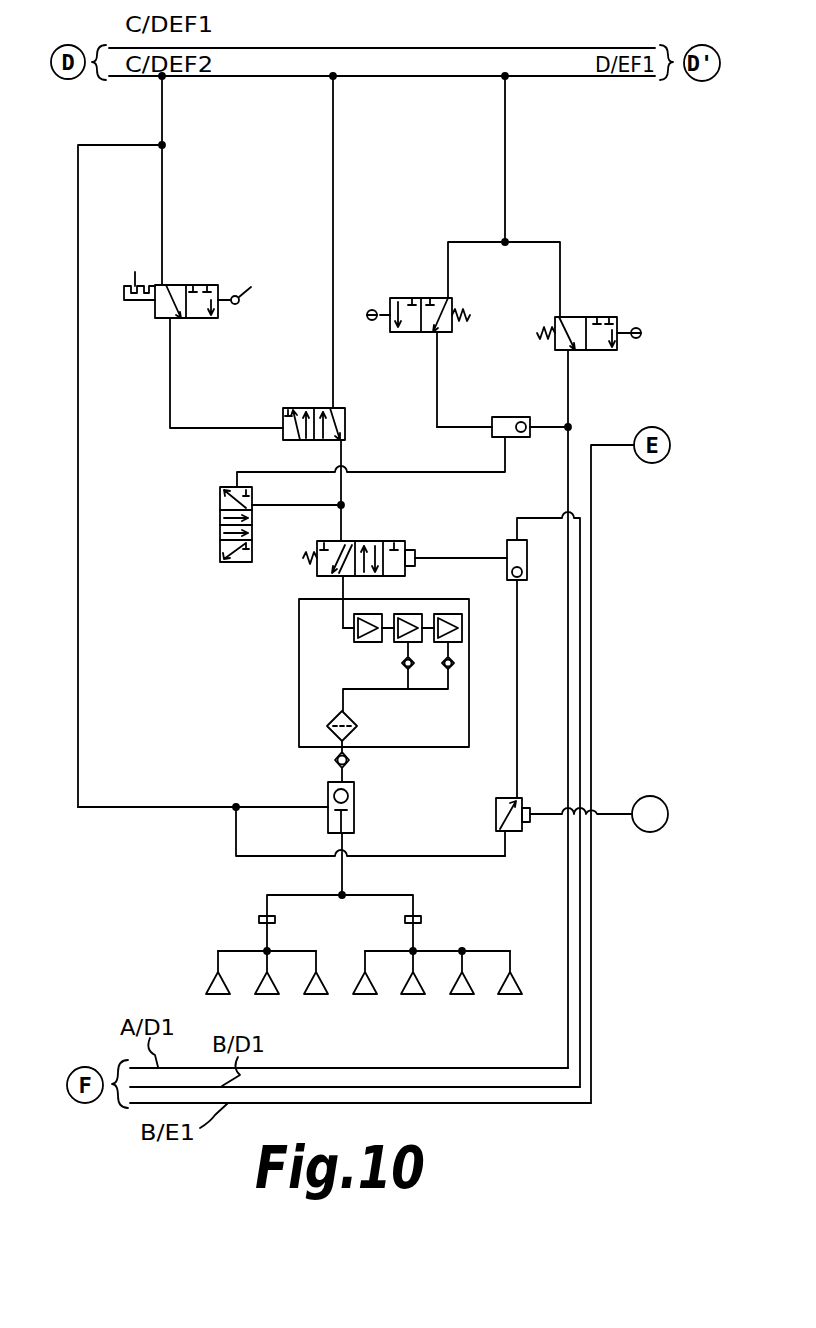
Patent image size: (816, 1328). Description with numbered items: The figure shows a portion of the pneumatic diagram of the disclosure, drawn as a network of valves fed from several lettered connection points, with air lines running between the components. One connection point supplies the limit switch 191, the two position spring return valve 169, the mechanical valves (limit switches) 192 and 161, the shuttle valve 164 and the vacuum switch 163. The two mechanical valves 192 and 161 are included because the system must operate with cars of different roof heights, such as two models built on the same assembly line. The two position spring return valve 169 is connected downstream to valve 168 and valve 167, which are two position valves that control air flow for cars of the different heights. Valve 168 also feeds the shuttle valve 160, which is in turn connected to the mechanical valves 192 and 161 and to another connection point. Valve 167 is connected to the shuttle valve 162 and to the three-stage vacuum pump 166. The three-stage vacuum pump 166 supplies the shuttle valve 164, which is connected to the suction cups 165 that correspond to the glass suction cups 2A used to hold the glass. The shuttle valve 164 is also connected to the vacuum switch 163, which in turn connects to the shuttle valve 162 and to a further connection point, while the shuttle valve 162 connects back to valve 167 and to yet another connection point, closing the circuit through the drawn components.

The limit switch 191 is at (218, 308).
The mechanical valve (limit switch) 192 is at (452, 302).
The mechanical valve (limit switch) 161 is at (617, 345).
The shuttle valve 160 is at (515, 437).
The two position spring return valve 169 is at (345, 428).
The valve 168 is at (220, 540).
The valve 167 is at (405, 570).
The shuttle valve 162 is at (527, 560).
The 3-stage vacuum pump 166 is at (299, 677).
The shuttle valve 164 is at (291, 821).
The vacuum switch 163 is at (510, 800).
The suction cups 165 is at (349, 964).
The glass suction cups 2A is at (203, 972).